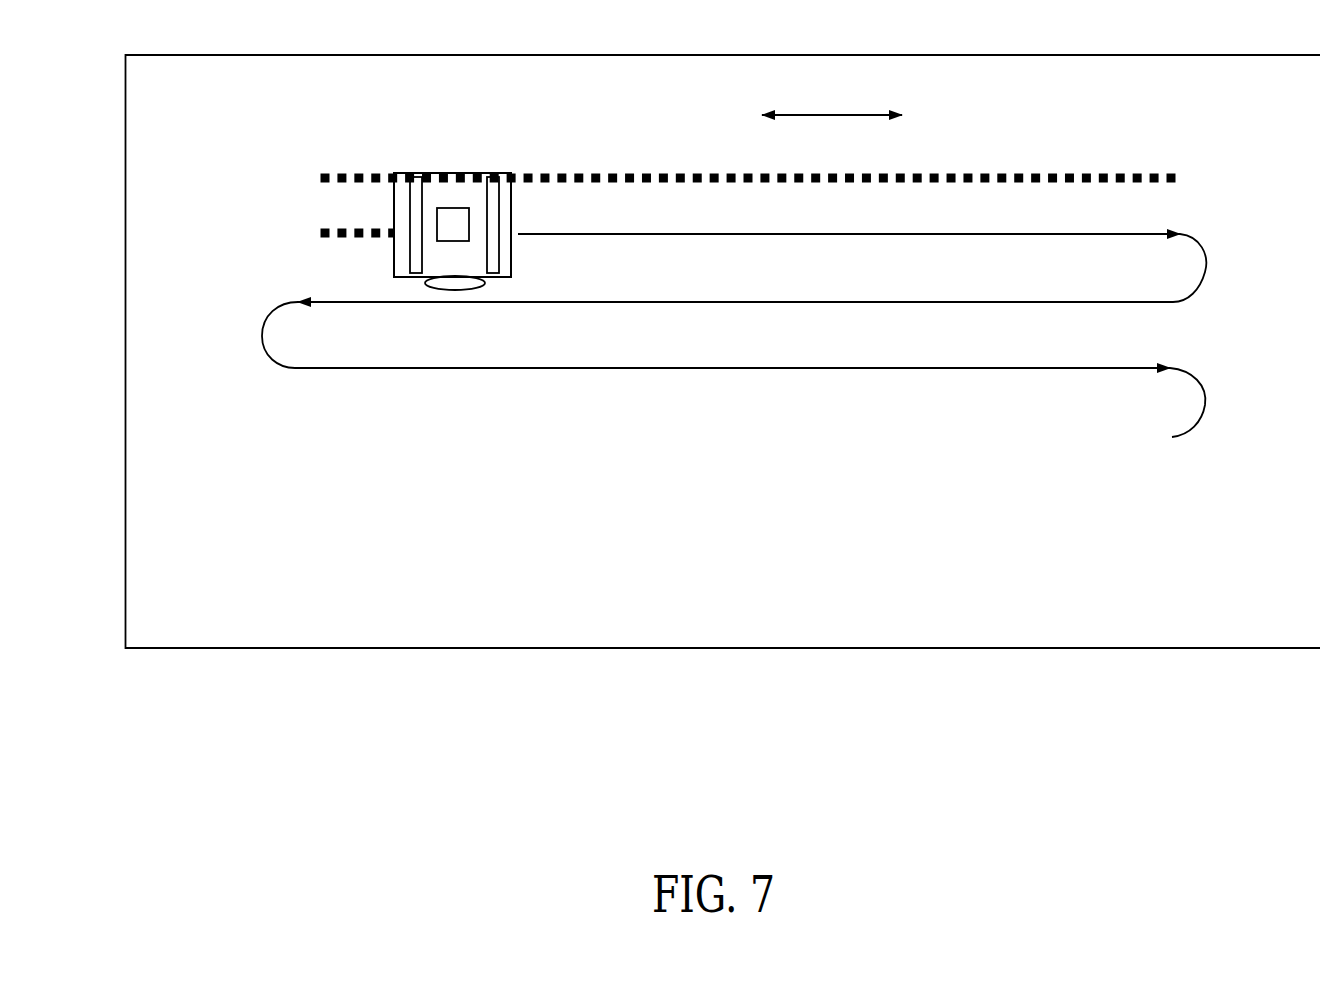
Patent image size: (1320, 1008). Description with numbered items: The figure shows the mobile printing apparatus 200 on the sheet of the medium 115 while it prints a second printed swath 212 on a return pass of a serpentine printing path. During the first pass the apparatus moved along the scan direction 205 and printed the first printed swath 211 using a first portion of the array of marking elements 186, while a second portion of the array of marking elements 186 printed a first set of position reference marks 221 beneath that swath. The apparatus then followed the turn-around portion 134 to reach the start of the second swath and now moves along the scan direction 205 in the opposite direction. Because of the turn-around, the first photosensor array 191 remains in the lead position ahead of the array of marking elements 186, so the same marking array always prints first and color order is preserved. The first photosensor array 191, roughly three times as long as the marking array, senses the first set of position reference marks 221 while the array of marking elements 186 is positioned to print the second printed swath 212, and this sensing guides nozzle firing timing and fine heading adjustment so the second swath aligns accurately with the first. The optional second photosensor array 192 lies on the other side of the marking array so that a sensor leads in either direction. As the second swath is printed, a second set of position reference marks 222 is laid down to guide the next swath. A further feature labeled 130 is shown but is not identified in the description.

The sheet of the medium 115 is at (126, 397).
The first indicia region 130 is at (716, 156).
The turn-around portion 134 is at (274, 228).
The array of marking elements 186 is at (445, 242).
The first photosensor array 191 is at (496, 223).
The second photosensor array 192 is at (411, 212).
The mobile printing apparatus 200 is at (439, 231).
The scan direction 205 is at (840, 115).
The first printed swath 211 is at (1183, 162).
The second printed swath 212 is at (314, 216).
The first set of position reference marks 221 is at (1183, 173).
The second set of position reference marks 222 is at (339, 260).